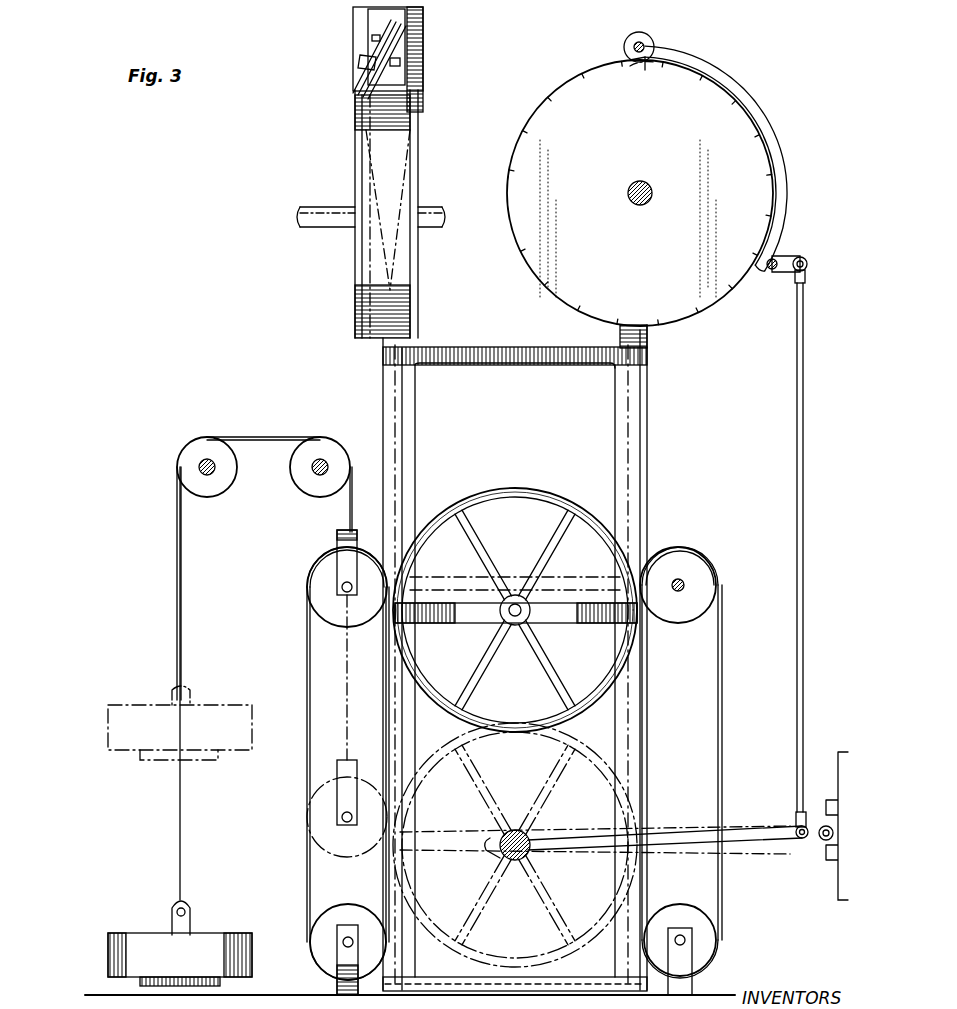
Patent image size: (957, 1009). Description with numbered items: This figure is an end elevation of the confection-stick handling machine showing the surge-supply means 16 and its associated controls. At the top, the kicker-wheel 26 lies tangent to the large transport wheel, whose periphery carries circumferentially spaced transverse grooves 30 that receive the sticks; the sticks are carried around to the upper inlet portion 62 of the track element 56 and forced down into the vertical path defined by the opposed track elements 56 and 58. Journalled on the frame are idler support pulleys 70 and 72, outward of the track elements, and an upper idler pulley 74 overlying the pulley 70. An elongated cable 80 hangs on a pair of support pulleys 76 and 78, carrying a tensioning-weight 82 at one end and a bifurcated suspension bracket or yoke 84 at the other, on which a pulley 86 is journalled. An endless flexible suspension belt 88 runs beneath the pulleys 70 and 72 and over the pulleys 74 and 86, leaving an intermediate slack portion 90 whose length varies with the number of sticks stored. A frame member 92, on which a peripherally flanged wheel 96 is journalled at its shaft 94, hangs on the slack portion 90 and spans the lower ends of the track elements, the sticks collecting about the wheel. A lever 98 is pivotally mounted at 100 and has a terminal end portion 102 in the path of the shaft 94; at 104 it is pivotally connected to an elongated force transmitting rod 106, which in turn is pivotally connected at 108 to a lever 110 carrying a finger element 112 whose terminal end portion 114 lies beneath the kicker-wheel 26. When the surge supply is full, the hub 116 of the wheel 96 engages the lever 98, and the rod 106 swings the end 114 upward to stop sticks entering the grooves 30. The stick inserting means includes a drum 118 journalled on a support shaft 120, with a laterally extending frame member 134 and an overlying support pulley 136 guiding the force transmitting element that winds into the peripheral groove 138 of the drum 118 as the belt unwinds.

The surge-supply means 16 is at (541, 639).
The kicker-wheel 26 is at (657, 47).
The transverse grooves 30 is at (568, 97).
The track element 56 is at (646, 513).
The track element 58 is at (405, 497).
The upper inlet portion 62 is at (630, 326).
The idler support pulley 70 is at (706, 944).
The idler support pulley 72 is at (320, 943).
The upper idler pulley 74 is at (700, 560).
The support pulley 76 is at (214, 488).
The support pulley 78 is at (310, 488).
The cable 80 is at (340, 674).
The tensioning-weight 82 is at (208, 945).
The suspension bracket or yoke 84 is at (335, 541).
The pulley 86 is at (330, 807).
The suspension belt 88 is at (722, 750).
The slack portion 90 is at (630, 683).
The frame member 92 is at (494, 352).
The shaft 94 is at (528, 616).
The peripherally flanged wheel 96 is at (508, 718).
The lever 98 is at (740, 829).
The pivot 100 is at (827, 850).
The terminal end portion 102 is at (500, 837).
The pivotal connection 104 is at (800, 841).
The force transmitting rod 106 is at (797, 566).
The pivotal connection 108 is at (801, 258).
The lever 110 is at (778, 272).
The finger element 112 is at (722, 100).
The terminal end portion 114 is at (637, 66).
The hub 116 is at (494, 852).
The drum 118 is at (417, 140).
The support shaft 120 is at (432, 210).
The frame member 134 is at (418, 44).
The support pulley 136 is at (362, 82).
The peripheral groove 138 is at (358, 293).